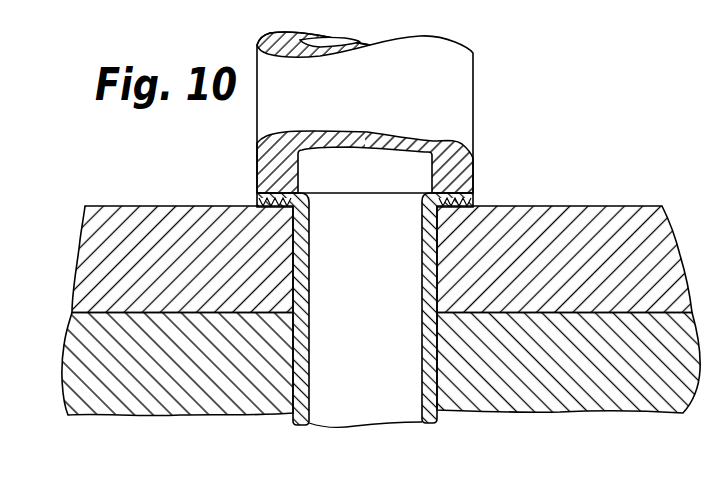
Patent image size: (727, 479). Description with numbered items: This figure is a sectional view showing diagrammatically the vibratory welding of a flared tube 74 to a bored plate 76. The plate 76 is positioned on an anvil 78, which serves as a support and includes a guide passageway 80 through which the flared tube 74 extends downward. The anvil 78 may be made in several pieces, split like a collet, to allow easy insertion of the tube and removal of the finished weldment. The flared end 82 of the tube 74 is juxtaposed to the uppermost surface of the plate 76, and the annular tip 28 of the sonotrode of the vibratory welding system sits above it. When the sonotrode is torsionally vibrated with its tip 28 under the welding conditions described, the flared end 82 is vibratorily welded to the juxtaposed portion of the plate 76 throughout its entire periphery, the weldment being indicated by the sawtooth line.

The annular tip 28 is at (460, 160).
The flared tube 74 is at (433, 258).
The bored plate 76 is at (613, 240).
The anvil 78 is at (566, 380).
The guide passageway 80 is at (293, 370).
The flared end 82 is at (260, 197).